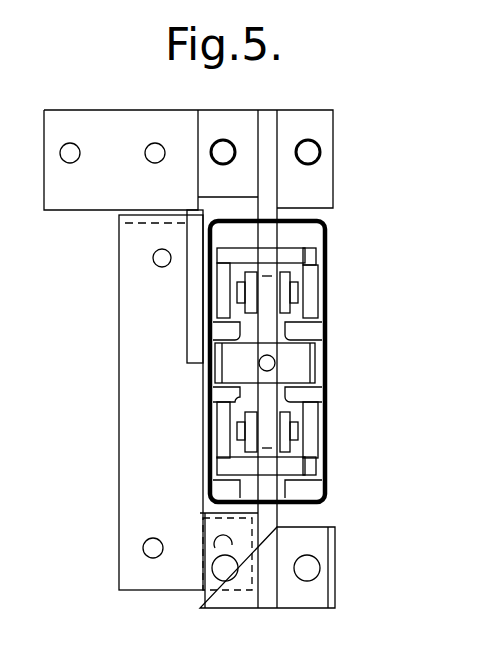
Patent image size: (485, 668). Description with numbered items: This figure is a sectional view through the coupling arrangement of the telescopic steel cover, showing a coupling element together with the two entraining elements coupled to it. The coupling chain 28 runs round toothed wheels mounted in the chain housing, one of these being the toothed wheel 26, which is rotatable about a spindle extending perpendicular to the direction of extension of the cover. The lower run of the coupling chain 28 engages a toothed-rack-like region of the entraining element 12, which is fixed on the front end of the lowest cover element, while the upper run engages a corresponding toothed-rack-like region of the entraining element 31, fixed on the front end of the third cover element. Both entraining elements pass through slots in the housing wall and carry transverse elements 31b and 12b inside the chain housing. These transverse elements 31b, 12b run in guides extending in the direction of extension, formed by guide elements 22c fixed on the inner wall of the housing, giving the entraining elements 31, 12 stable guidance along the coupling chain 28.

The entraining element 31 is at (340, 151).
The transverse element 31b is at (310, 257).
The coupling chain 28 is at (297, 292).
The guide elements 22c is at (212, 300).
The toothed wheel 26 is at (307, 355).
The transverse element 12b is at (307, 468).
The entraining element 12 is at (345, 562).